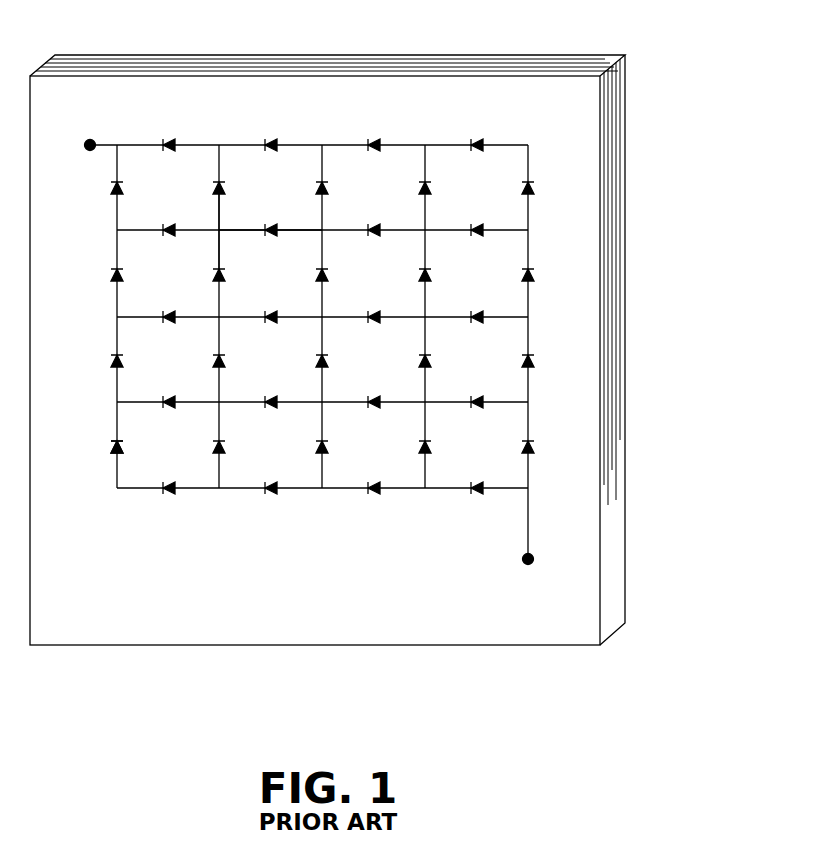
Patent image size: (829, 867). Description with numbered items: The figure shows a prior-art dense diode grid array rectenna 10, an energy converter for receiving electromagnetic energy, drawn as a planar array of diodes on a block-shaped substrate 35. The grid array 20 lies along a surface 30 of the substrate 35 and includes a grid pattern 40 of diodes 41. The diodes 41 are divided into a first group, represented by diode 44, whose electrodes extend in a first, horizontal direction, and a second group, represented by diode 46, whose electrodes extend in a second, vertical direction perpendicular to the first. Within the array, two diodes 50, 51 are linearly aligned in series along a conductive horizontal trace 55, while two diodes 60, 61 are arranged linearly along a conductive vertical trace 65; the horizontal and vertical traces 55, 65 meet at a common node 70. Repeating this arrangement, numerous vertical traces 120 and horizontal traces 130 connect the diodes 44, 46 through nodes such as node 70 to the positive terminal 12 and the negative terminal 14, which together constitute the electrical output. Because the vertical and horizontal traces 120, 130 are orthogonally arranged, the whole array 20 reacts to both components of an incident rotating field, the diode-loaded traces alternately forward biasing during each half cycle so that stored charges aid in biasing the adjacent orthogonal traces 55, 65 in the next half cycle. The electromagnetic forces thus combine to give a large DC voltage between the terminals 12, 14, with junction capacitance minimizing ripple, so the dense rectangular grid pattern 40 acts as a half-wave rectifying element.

The rectenna 10 is at (658, 63).
The positive terminal 12 is at (520, 560).
The negative terminal 14 is at (90, 140).
The grid array 20 is at (524, 132).
The surface 30 is at (442, 87).
The substrate 35 is at (580, 63).
The grid pattern 40 is at (343, 145).
The diodes 41 is at (270, 143).
The diode of first group 44 is at (115, 358).
The diode of second group 46 is at (280, 489).
The diode 50 is at (166, 238).
The diode 51 is at (274, 228).
The conductive horizontal trace 55 is at (300, 233).
The diode 60 is at (222, 275).
The diode 61 is at (214, 187).
The conductive vertical trace 65 is at (219, 210).
The common node 70 is at (219, 235).
The vertical traces 120 is at (115, 470).
The horizontal traces 130 is at (197, 489).